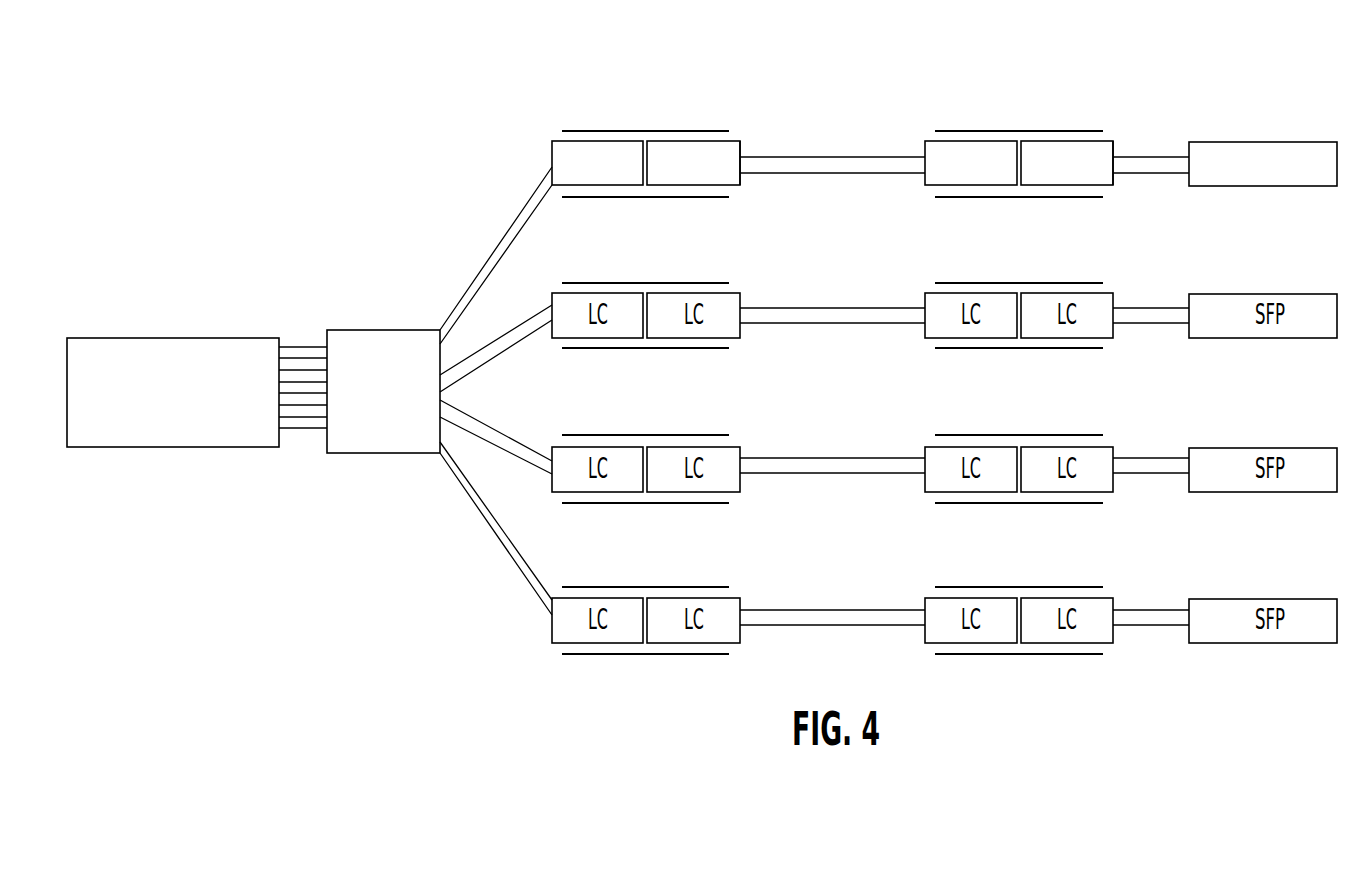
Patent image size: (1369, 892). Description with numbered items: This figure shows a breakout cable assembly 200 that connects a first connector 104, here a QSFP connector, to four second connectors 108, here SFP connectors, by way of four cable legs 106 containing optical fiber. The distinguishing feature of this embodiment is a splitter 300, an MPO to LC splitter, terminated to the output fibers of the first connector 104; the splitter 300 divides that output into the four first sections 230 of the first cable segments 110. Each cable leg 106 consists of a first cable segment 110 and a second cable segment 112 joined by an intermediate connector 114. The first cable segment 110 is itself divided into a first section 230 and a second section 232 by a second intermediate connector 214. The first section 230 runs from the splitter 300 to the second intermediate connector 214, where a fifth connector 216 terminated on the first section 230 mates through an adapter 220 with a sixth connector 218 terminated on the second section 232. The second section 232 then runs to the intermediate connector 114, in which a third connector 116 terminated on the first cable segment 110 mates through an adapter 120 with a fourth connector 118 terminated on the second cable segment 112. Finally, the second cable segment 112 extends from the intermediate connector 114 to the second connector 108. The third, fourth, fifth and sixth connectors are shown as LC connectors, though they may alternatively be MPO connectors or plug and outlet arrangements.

The first connector 104 is at (156, 338).
The splitter 300 is at (396, 454).
The cable legs 106 is at (669, 50).
The breakout cable assembly 200 is at (497, 104).
The first section 230 is at (520, 233).
The second intermediate connector 214 is at (565, 118).
The fifth connector 216 is at (637, 185).
The adapter 220 is at (718, 198).
The sixth connector 218 is at (740, 185).
The first cable segment 110 is at (794, 198).
The second section 232 is at (808, 157).
The intermediate connector 114 is at (926, 113).
The third connector 116 is at (926, 185).
The adapter 120 is at (1020, 198).
The fourth connector 118 is at (1110, 184).
The second cable segment 112 is at (1150, 175).
The second connector 108 is at (1300, 187).